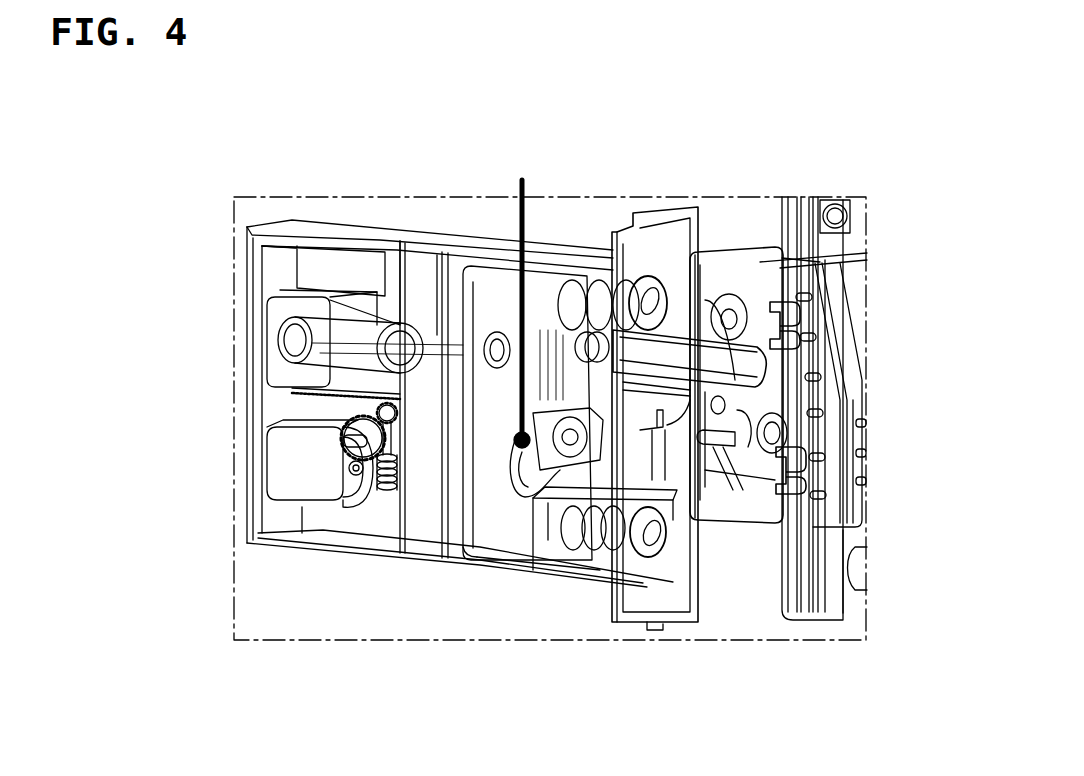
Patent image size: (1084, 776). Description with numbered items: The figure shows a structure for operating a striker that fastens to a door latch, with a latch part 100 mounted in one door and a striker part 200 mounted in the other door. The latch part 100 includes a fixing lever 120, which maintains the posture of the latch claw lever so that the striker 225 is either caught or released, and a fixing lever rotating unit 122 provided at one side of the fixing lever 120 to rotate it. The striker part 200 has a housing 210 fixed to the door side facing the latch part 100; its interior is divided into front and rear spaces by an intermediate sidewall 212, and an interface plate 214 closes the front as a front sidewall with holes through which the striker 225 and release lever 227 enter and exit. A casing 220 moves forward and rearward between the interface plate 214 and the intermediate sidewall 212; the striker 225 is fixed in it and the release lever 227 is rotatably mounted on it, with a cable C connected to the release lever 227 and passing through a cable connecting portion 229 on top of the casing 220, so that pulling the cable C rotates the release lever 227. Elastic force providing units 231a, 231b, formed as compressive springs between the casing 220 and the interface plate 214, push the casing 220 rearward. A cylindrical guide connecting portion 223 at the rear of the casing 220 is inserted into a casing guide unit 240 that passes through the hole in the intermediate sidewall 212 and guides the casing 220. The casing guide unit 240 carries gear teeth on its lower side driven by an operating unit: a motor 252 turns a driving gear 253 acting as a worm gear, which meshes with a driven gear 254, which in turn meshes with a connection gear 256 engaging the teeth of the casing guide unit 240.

The latch part 100 is at (752, 560).
The fixing lever 120 is at (793, 455).
The fixing lever rotating unit 122 is at (805, 442).
The striker part 200 is at (447, 600).
The housing 210 is at (320, 548).
The intermediate sidewall 212 is at (418, 236).
The interface plate 214 is at (640, 593).
The casing 220 is at (505, 520).
The guide connecting portion 223 is at (411, 277).
The striker 225 is at (665, 290).
The release lever 227 is at (545, 500).
The cable connecting portion 229 is at (490, 275).
The elastic force providing unit 231a is at (585, 545).
The elastic force providing unit 231b is at (565, 282).
The casing guide unit 240 is at (307, 337).
The motor 252 is at (282, 472).
The driving gear 253 is at (383, 492).
The driven gear 254 is at (353, 430).
The connection gear 256 is at (310, 412).
The cable C is at (527, 305).